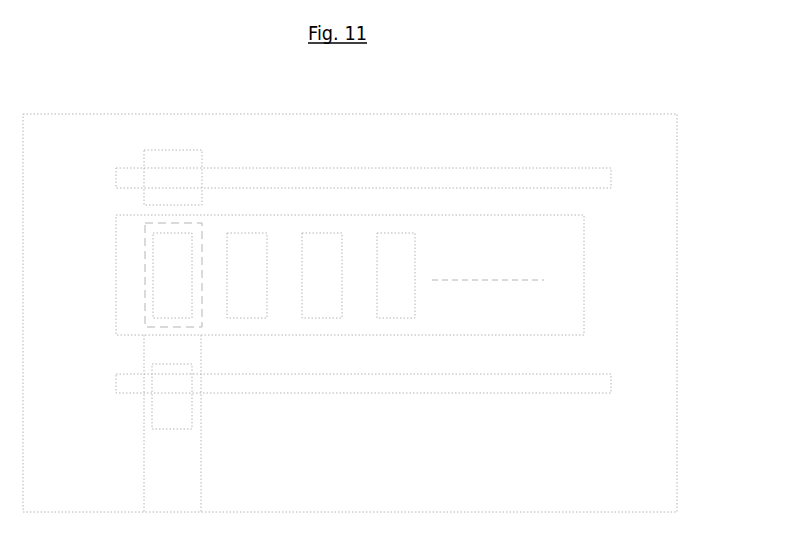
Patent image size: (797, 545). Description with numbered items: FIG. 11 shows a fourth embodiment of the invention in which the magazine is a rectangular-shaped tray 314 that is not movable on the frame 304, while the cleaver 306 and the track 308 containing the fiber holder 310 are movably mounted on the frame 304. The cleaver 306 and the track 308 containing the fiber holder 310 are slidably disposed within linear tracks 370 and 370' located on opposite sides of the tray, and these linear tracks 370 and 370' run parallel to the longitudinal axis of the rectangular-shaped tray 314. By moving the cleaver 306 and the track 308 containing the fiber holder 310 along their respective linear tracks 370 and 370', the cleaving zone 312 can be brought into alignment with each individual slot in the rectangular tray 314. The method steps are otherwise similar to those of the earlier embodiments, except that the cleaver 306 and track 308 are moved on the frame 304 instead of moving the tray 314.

The frame 304 is at (402, 313).
The cleaver 306 is at (186, 183).
The track 308 is at (234, 423).
The fiber holder 310 is at (227, 401).
The cleaving zone 312 is at (123, 275).
The rectangular-shaped tray 314 is at (388, 275).
The linear track 370 is at (363, 157).
The linear track 370' is at (382, 370).